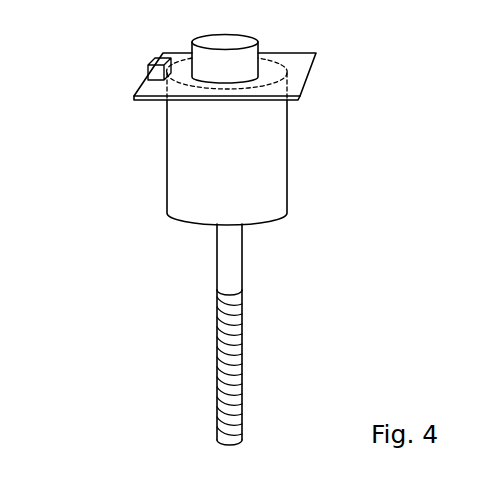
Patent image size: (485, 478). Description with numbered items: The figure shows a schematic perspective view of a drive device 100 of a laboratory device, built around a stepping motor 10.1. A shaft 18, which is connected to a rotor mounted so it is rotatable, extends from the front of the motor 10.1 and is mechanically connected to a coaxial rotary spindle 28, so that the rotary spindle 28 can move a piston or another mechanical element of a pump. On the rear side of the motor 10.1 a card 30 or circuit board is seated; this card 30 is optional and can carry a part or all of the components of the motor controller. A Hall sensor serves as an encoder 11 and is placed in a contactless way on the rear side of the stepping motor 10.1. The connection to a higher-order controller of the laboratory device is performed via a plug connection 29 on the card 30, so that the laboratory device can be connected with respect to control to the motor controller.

The vibration damping / mounting assembly 100 is at (78, 134).
The encoder 11 is at (259, 50).
The plug connection 29 is at (157, 60).
The card 30 is at (304, 79).
The stepping motor 10.1 is at (278, 147).
The shaft 18 is at (235, 260).
The rotary spindle 28 is at (240, 348).